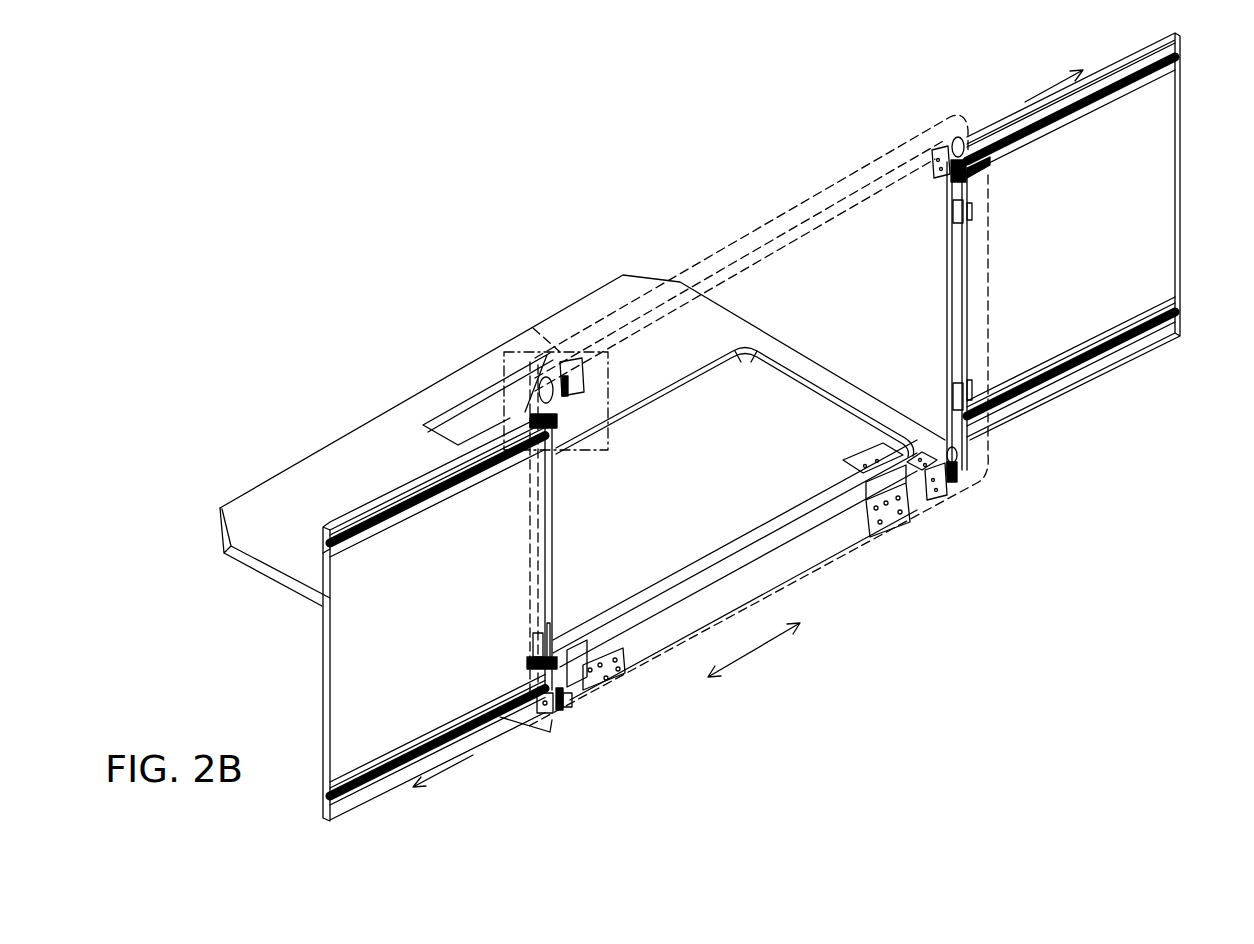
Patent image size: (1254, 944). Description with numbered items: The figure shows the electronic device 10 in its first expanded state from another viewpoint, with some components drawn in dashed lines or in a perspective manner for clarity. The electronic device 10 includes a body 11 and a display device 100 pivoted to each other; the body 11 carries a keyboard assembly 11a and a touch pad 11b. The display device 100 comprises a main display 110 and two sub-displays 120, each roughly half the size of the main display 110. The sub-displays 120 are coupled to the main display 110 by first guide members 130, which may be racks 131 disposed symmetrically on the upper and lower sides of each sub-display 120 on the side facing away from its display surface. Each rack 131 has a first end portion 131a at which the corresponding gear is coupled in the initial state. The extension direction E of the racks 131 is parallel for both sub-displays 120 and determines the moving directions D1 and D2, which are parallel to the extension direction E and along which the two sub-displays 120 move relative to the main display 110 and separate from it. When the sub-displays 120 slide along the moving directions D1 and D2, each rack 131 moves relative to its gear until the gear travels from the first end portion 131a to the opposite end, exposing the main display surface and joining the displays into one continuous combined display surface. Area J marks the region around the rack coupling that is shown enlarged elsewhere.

The electronic device 10 is at (1173, 739).
The body 11 is at (243, 513).
The keyboard assembly 11a is at (723, 403).
The touch pad 11b is at (450, 418).
The display device 100 is at (1020, 463).
The main display 110 is at (902, 147).
The sub-display 120 is at (343, 688).
The first guide member 130 is at (716, 424).
The rack 131 is at (377, 513).
The first end portion 131a is at (328, 553).
The area J is at (545, 348).
The moving direction D1 is at (1054, 77).
The moving direction D2 is at (446, 780).
The extension direction E is at (754, 654).